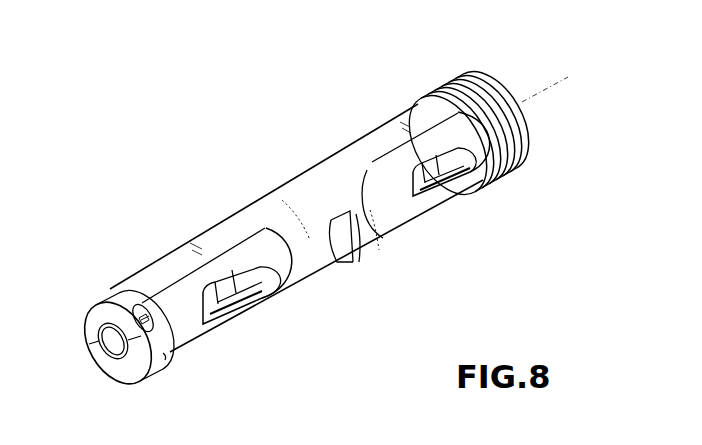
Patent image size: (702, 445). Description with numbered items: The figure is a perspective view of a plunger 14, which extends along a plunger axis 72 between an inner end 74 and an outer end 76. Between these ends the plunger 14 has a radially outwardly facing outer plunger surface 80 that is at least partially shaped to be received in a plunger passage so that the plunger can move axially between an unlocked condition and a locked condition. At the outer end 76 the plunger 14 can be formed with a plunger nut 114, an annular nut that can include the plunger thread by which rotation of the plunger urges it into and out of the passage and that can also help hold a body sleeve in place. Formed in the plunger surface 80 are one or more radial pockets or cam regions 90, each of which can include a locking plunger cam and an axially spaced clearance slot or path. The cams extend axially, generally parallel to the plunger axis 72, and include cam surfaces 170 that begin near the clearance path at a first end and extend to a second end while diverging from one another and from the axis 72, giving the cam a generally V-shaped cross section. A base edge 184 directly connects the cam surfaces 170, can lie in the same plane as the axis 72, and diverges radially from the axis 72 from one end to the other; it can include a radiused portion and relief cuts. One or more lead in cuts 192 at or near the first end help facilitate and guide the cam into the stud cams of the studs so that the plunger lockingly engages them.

The plunger 14 is at (446, 58).
The plunger axis 72 is at (72, 372).
The inner end 74 is at (125, 378).
The outer end 76 is at (490, 75).
The outer plunger surface 80 is at (313, 190).
The radial pocket or cam region 90 is at (362, 116).
The plunger nut 114 is at (530, 133).
The cam surface 170 is at (456, 160).
The base edge 184 is at (462, 182).
The lead in cut 192 is at (395, 152).